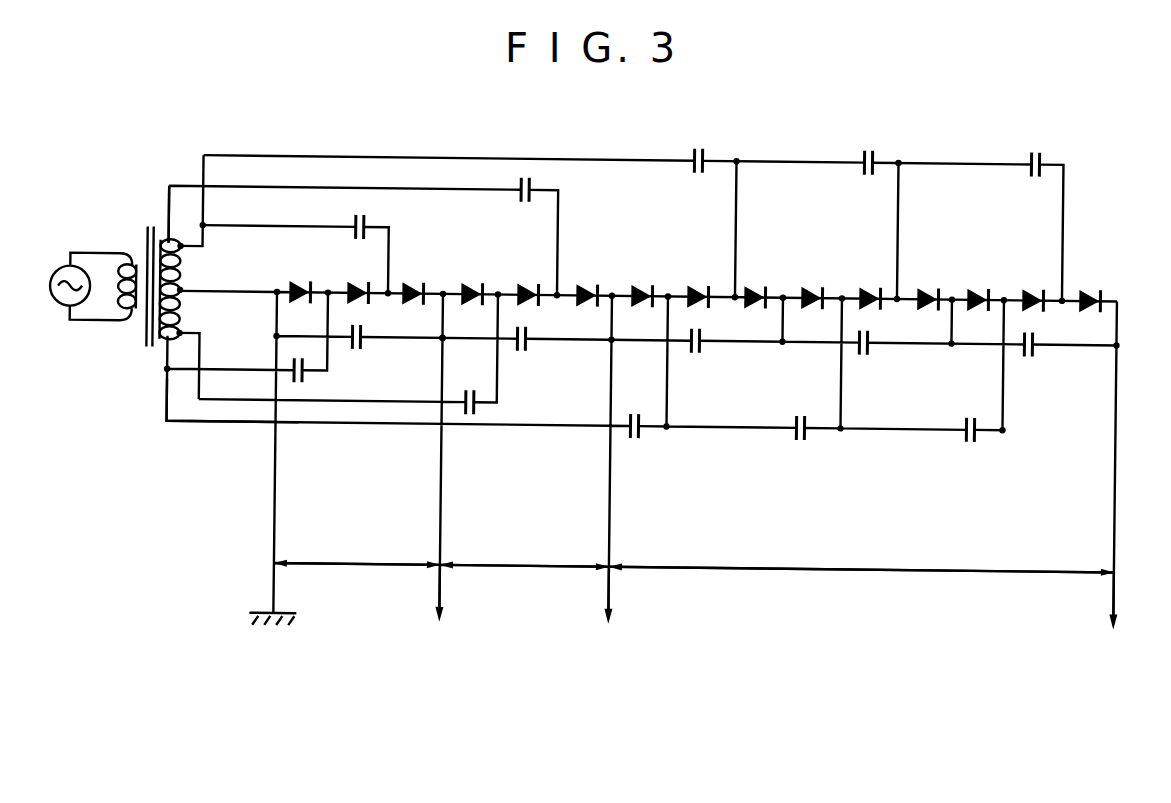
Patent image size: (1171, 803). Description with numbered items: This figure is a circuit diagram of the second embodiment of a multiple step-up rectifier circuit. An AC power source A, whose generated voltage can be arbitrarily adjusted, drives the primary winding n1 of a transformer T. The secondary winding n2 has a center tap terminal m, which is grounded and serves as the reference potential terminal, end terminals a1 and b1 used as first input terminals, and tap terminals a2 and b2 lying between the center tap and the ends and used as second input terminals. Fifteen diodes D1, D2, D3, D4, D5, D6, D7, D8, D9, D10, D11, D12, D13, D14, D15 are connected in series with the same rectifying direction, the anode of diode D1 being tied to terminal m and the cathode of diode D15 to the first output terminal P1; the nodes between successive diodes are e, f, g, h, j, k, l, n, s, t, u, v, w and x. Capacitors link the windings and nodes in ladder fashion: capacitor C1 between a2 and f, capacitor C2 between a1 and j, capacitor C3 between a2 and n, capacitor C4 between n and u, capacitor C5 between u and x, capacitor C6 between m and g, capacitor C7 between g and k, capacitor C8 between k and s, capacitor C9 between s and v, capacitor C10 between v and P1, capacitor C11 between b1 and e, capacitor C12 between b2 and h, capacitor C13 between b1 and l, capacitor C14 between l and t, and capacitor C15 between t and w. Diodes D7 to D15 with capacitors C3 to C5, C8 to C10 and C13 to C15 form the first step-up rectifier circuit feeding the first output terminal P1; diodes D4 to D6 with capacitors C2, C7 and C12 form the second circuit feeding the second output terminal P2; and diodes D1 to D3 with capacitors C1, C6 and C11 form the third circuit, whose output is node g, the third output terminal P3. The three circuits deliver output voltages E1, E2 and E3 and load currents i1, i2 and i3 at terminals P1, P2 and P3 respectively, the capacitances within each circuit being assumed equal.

The transformer T is at (142, 236).
The AC power source A is at (69, 310).
The primary winding n1 is at (127, 328).
The secondary winding n2 is at (167, 350).
The terminal a1 is at (157, 205).
The tap terminal a2 is at (187, 202).
The terminal b1 is at (217, 414).
The tap terminal b2 is at (196, 355).
The diode D1 is at (297, 281).
The diode D2 is at (355, 281).
The diode D3 is at (410, 281).
The diode D4 is at (469, 281).
The diode D5 is at (525, 281).
The diode D6 is at (584, 281).
The diode D7 is at (639, 281).
The diode D8 is at (695, 281).
The diode D9 is at (752, 281).
The diode D10 is at (809, 281).
The diode D11 is at (867, 281).
The diode D12 is at (925, 281).
The diode D13 is at (975, 281).
The diode D14 is at (1030, 281).
The diode D15 is at (1087, 281).
The capacitor C1 is at (365, 215).
The capacitor C2 is at (530, 176).
The capacitor C3 is at (697, 143).
The capacitor C4 is at (867, 141).
The capacitor C5 is at (1034, 140).
The capacitor C6 is at (362, 348).
The capacitor C7 is at (527, 348).
The capacitor C8 is at (701, 348).
The capacitor C9 is at (869, 348).
The capacitor C10 is at (1034, 348).
The capacitor C11 is at (304, 382).
The capacitor C12 is at (478, 408).
The capacitor C13 is at (641, 434).
The capacitor C14 is at (807, 434).
The capacitor C15 is at (966, 434).
The center tap terminal m is at (274, 278).
The node e is at (327, 289).
The node f is at (386, 289).
The node g is at (443, 289).
The node h is at (498, 289).
The node j is at (557, 289).
The node k is at (612, 289).
The node l is at (668, 289).
The node n is at (735, 289).
The node s is at (783, 289).
The node t is at (842, 289).
The node u is at (897, 289).
The node v is at (952, 289).
The node w is at (1004, 289).
The node x is at (1062, 296).
The first output terminal P1 is at (1120, 334).
The second output terminal P2 is at (608, 339).
The third output terminal P3 is at (440, 339).
The output voltage E1 is at (861, 558).
The output voltage E2 is at (524, 555).
The output voltage E3 is at (357, 554).
The load current i1 is at (1109, 614).
The load current i2 is at (604, 611).
The load current i3 is at (433, 610).